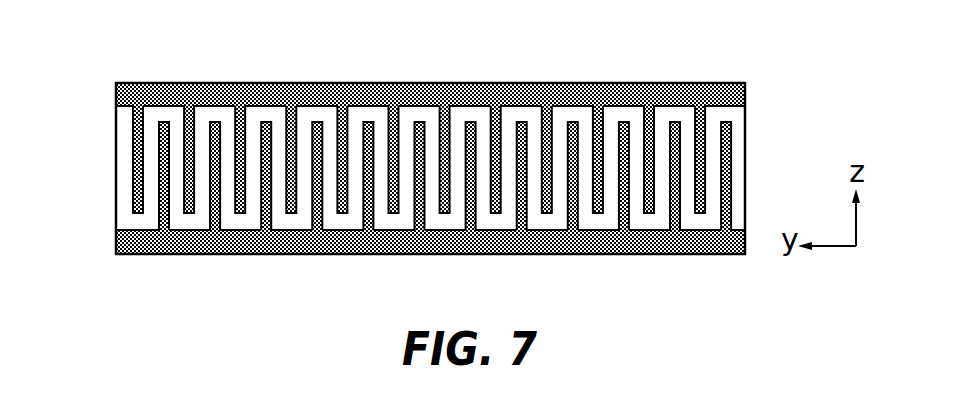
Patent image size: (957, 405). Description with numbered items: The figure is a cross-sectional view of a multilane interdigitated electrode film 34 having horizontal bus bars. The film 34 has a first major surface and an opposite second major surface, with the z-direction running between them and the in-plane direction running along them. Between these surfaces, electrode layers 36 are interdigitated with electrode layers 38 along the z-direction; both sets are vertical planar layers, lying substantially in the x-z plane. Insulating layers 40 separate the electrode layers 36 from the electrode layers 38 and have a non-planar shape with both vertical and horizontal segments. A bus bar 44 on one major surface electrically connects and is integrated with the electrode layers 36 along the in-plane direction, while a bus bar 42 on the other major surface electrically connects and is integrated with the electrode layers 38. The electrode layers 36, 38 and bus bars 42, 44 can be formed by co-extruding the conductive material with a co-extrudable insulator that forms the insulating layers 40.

The multilane interdigitated electrode film 34 is at (740, 55).
The electrode layers 36 is at (267, 121).
The electrode layers 38 is at (240, 213).
The insulating layers 40 is at (329, 222).
The bus bar 42 is at (340, 93).
The bus bar 44 is at (400, 246).